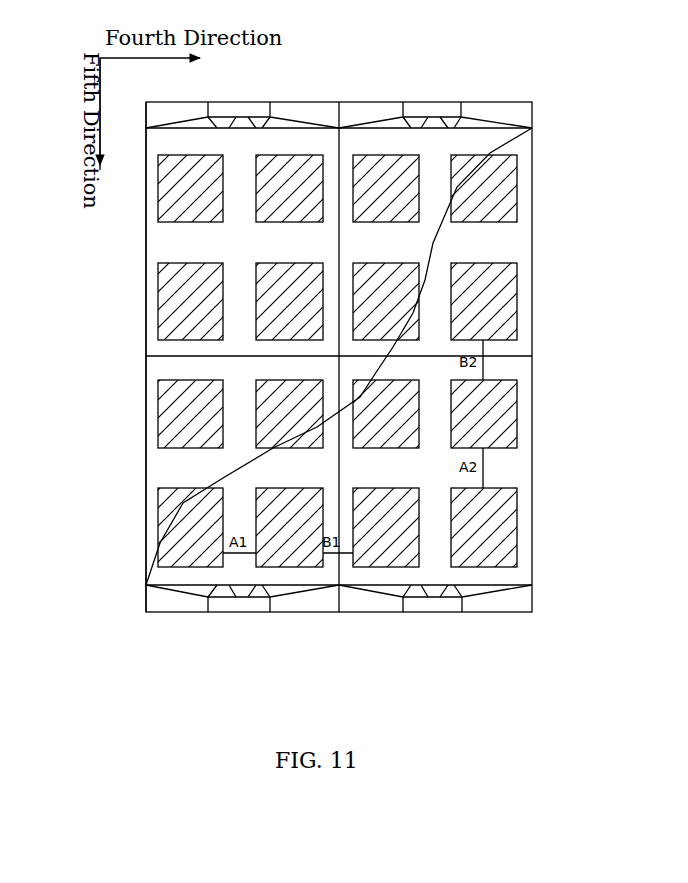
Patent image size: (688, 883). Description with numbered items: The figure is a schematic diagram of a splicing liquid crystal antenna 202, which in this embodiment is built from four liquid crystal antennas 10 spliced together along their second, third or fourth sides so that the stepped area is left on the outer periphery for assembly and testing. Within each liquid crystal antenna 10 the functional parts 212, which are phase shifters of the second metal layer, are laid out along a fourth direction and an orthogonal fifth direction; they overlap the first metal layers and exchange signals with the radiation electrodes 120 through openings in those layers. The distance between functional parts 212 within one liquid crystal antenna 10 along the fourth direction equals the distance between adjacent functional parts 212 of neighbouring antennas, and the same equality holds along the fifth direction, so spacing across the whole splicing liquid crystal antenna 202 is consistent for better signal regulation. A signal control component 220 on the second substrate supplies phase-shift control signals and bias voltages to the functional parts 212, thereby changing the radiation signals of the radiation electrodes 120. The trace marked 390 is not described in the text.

The splicing liquid crystal antenna 202 is at (353, 58).
The liquid crystal antenna 10 is at (143, 376).
The radiation electrodes 120 is at (266, 204).
The functional parts 212 is at (488, 428).
The signal control component 220 is at (422, 607).
The signal trace 390 is at (282, 599).